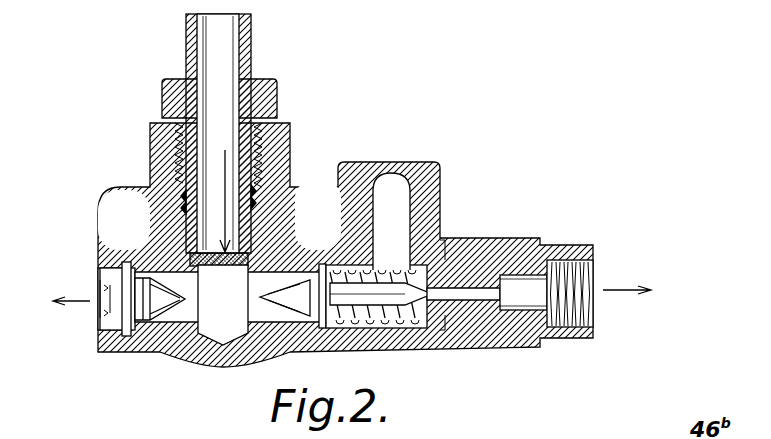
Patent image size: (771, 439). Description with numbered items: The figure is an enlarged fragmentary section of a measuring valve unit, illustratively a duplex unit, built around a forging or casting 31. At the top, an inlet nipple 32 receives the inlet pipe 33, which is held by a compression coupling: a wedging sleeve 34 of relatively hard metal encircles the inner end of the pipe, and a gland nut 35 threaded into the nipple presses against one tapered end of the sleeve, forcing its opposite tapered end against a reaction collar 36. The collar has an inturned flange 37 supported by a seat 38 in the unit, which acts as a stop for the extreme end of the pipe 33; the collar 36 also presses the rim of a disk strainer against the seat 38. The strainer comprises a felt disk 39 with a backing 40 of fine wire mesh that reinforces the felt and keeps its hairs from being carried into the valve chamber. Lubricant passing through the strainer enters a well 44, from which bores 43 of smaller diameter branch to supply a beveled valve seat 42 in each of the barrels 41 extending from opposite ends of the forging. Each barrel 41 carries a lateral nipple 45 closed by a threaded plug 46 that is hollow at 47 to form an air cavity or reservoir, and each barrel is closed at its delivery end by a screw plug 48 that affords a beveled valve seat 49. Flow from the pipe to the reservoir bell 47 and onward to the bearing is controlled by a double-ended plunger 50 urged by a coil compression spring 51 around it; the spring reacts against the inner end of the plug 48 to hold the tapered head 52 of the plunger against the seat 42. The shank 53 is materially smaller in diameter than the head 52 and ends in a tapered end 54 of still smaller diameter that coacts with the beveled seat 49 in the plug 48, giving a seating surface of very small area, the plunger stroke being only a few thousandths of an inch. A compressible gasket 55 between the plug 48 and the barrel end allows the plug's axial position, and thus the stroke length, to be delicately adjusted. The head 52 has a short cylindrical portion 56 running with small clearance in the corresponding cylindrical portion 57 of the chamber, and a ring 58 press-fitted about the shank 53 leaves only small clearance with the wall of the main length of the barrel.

The forging or casting 31 is at (152, 350).
The inlet nipple 32 is at (256, 196).
The inlet pipe 33 is at (250, 48).
The wedging sleeve 34 is at (186, 204).
The gland nut 35 is at (272, 99).
The reaction collar 36 is at (292, 232).
The inturned flange 37 is at (192, 270).
The seat 38 is at (300, 330).
The felt disk 39 is at (222, 201).
The wire mesh backing 40 is at (223, 305).
The barrel 41 is at (343, 332).
The beveled valve seat 42 is at (130, 310).
The bore 43 is at (258, 300).
The well 44 is at (210, 322).
The lateral nipple 45 is at (445, 240).
The plug 46 is at (393, 163).
The air cavity or reservoir 47 is at (395, 188).
The screw plug 48 is at (543, 247).
The beveled valve seat 49 is at (462, 240).
The double-ended plunger 50 is at (395, 305).
The coil compression spring 51 is at (372, 322).
The tapered end or head 52 is at (150, 312).
The shank 53 is at (372, 288).
The tapered end 54 is at (430, 300).
The compressible gasket 55 is at (520, 248).
The short cylindrical portion 56 is at (318, 296).
The cylindrical portion of the chamber 57 is at (335, 235).
The ring 58 is at (391, 221).